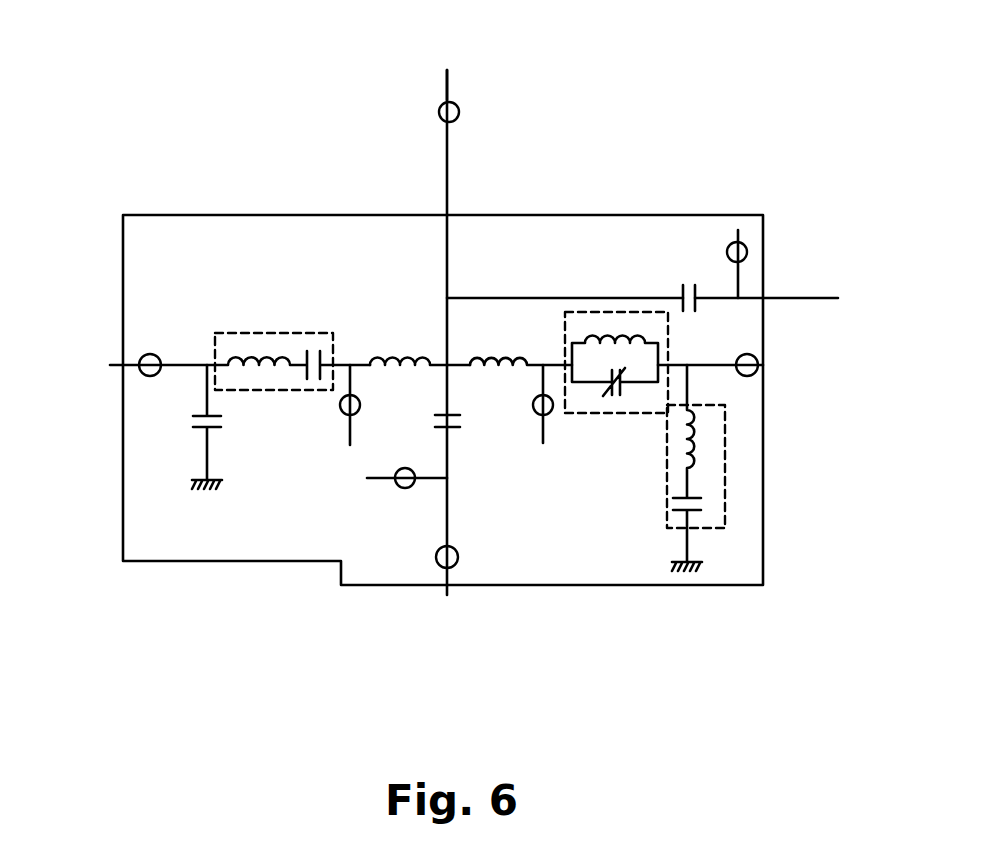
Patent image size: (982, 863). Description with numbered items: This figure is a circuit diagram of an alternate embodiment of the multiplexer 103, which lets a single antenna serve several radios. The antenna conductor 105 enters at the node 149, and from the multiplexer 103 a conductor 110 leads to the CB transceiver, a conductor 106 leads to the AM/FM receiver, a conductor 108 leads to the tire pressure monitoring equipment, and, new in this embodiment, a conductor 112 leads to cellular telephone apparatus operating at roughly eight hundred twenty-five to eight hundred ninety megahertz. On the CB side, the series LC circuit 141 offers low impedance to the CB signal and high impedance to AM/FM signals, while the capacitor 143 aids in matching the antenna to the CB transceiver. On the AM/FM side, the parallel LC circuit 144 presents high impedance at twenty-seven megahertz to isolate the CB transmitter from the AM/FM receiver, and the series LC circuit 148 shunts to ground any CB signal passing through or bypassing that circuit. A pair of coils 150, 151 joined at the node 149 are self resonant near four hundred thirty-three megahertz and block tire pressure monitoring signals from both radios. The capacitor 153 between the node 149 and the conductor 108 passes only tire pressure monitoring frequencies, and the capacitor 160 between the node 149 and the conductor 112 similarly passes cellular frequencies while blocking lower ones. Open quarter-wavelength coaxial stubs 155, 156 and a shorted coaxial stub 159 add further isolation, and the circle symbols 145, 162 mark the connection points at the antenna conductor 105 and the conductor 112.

The multiplexer 103 is at (556, 215).
The antenna conductor 105 is at (448, 78).
The conductor 106 is at (770, 364).
The conductor 108 is at (452, 590).
The conductor 110 is at (118, 367).
The conductor 112 is at (447, 147).
The series LC circuit 141 is at (312, 333).
The capacitor 143 is at (182, 427).
The parallel LC circuit 144 is at (600, 414).
The connection node 145 is at (461, 111).
The series LC circuit 148 is at (668, 513).
The node 149 is at (448, 282).
The coil 150 is at (398, 355).
The coil 151 is at (493, 362).
The capacitor 153 is at (452, 415).
The coaxial stub 155 is at (350, 437).
The coaxial stub 156 is at (542, 437).
The shorted coaxial stub 159 is at (383, 481).
The capacitor 160 is at (683, 288).
The connection node 162 is at (748, 249).